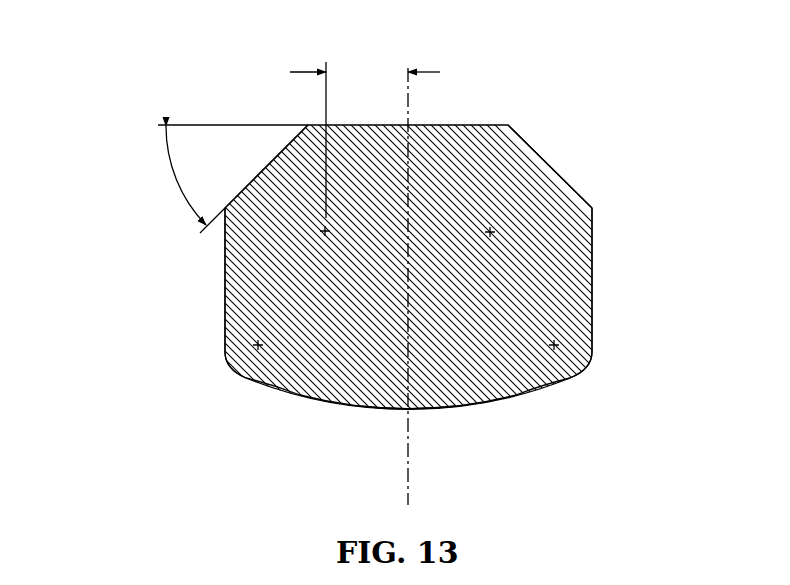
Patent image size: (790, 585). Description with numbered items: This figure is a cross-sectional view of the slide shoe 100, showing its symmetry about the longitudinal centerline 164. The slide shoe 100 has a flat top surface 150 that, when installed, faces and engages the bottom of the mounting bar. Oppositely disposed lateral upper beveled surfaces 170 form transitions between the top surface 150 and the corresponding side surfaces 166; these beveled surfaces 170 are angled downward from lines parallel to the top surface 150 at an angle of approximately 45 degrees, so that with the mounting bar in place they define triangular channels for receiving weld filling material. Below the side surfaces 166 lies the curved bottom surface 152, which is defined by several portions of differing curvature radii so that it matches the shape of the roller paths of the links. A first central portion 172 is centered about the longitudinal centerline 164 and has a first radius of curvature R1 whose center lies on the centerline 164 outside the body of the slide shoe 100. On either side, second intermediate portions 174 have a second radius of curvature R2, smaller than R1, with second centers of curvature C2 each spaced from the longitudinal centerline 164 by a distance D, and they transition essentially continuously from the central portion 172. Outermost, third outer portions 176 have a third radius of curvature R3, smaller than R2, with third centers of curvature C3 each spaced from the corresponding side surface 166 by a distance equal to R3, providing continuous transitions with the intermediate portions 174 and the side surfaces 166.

The slide shoe 100 is at (198, 55).
The top surface 150 is at (447, 125).
The lateral upper beveled surfaces 170 is at (266, 172).
The side surfaces 166 is at (225, 283).
The third outer portions 176 is at (225, 357).
The second intermediate portions 174 is at (263, 390).
The first central portion 172 is at (425, 410).
The bottom surface 152 is at (483, 402).
The longitudinal centerline 164 is at (410, 455).
The distance D is at (365, 140).
The angle of lateral upper beveled surfaces 45 is at (230, 179).
The second centers of curvature C2 is at (325, 231).
The third centers of curvature C3 is at (257, 343).
The first radius of curvature R1 is at (375, 410).
The second radius of curvature R2 is at (325, 231).
The third radius of curvature R3 is at (258, 345).